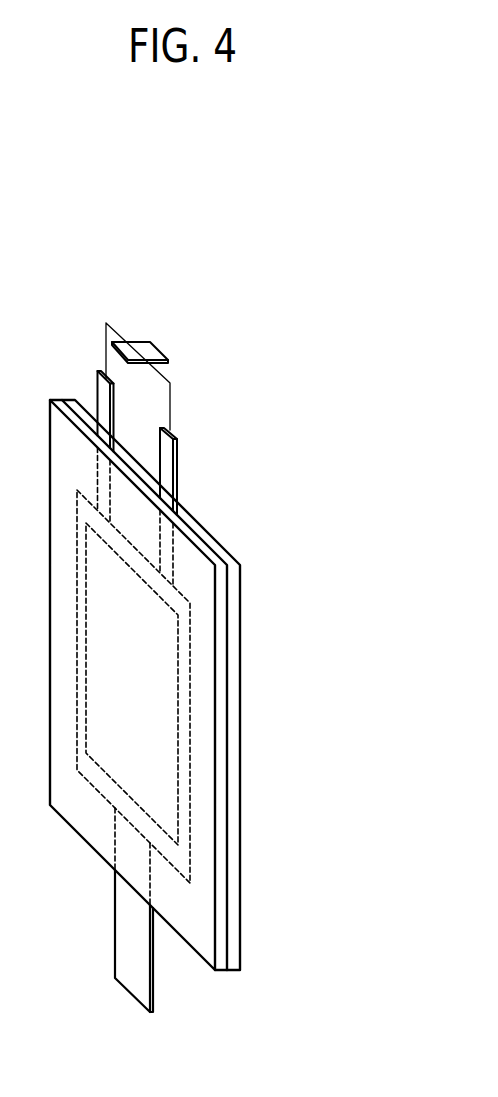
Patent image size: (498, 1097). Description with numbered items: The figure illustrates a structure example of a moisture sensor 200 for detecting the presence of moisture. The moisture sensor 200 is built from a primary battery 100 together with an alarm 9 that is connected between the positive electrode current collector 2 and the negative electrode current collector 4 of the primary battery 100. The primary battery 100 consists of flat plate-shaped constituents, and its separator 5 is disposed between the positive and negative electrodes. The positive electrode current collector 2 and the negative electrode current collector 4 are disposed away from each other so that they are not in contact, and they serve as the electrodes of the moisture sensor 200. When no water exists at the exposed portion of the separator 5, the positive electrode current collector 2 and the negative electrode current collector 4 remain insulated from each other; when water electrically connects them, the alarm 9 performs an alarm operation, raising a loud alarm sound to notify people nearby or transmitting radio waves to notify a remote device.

The positive electrode current collector 2 is at (102, 388).
The negative electrode current collector 4 is at (168, 463).
The separator 5 is at (135, 978).
The alarm 9 is at (145, 342).
The primary battery 100 is at (301, 427).
The moisture sensor 200 is at (248, 310).